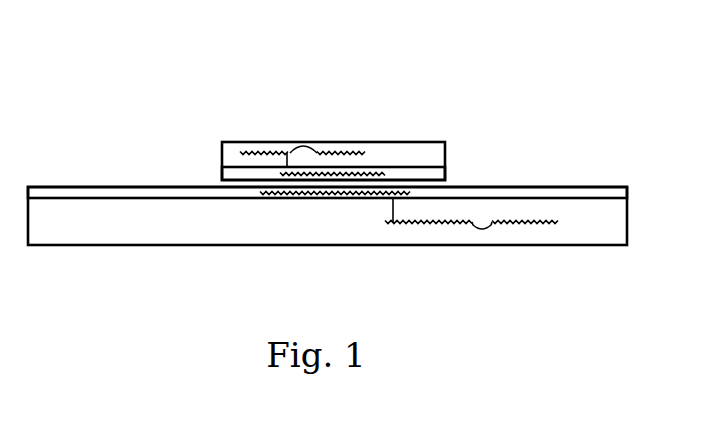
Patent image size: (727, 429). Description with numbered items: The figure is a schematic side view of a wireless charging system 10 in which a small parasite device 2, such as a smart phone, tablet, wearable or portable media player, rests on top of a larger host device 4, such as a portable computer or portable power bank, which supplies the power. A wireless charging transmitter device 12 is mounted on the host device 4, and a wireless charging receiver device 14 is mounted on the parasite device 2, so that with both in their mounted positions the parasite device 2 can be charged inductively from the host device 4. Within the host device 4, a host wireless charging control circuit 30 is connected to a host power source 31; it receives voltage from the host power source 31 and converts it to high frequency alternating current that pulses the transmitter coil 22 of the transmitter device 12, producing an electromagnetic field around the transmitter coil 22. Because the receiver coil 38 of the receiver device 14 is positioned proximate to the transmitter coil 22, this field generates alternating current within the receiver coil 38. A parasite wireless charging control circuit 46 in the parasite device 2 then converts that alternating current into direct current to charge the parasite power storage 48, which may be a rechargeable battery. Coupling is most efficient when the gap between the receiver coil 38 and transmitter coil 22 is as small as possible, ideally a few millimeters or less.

The parasite device 2 is at (378, 142).
The host device 4 is at (385, 230).
The wireless charging system 10 is at (318, 82).
The wireless charging transmitter device 12 is at (513, 193).
The wireless charging receiver device 14 is at (420, 173).
The transmitter coil 22 is at (330, 193).
The host wireless charging control circuit 30 is at (445, 222).
The host power source 31 is at (513, 222).
The receiver coil 38 is at (333, 172).
The parasite wireless charging control circuit 46 is at (267, 151).
The parasite power storage 48 is at (338, 152).